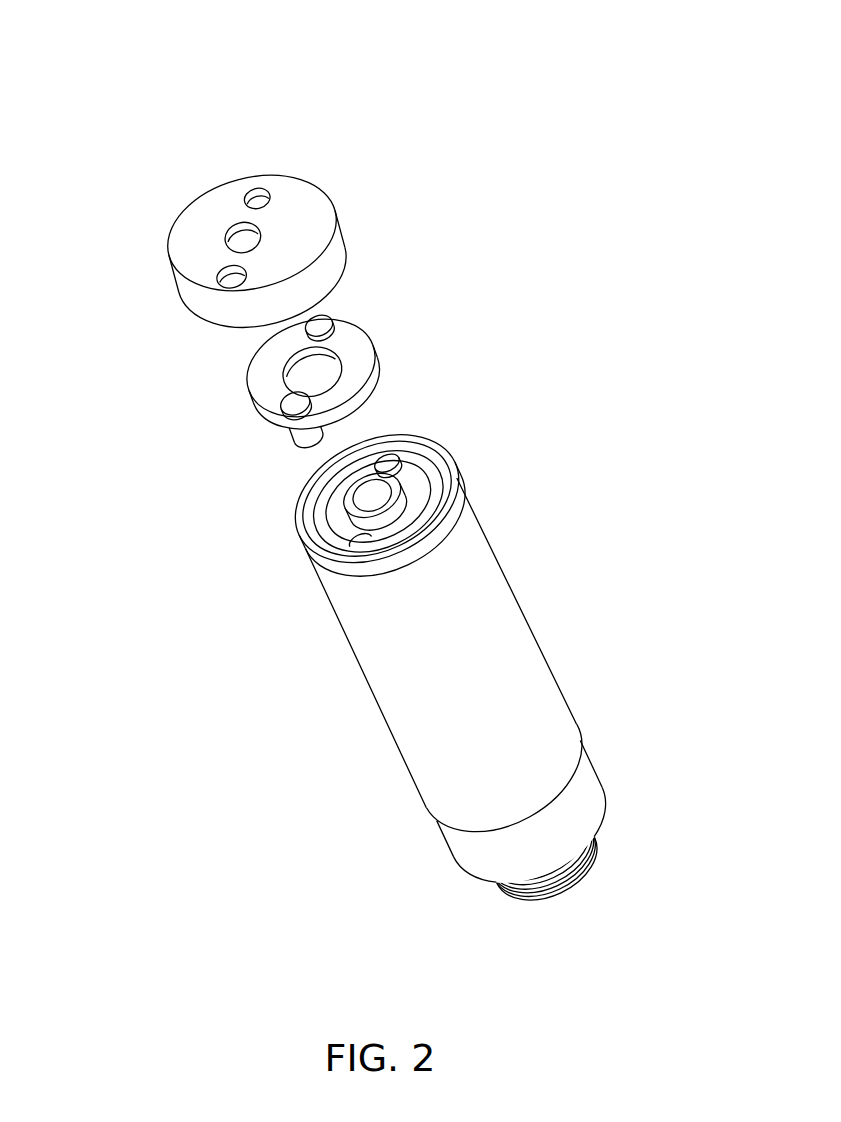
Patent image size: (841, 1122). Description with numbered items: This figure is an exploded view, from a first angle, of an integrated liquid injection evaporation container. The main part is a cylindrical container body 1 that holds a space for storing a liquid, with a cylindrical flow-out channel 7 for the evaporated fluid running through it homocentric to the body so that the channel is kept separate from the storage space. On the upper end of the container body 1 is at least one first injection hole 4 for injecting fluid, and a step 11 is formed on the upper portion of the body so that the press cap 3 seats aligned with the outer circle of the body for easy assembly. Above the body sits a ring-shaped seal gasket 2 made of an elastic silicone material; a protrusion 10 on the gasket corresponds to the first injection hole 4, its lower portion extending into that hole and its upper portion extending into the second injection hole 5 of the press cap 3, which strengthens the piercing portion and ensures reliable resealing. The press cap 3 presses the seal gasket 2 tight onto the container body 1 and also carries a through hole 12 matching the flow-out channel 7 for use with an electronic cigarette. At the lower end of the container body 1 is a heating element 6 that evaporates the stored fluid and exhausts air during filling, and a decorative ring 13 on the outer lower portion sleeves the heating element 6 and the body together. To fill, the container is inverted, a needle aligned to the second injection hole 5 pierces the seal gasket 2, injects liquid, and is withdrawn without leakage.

The container body 1 is at (493, 645).
The seal gasket 2 is at (370, 360).
The press cap 3 is at (310, 220).
The first injection hole 4 is at (385, 462).
The second injection hole 5 is at (227, 277).
The heating element 6 is at (500, 888).
The flow-out channel 7 is at (373, 494).
The protrusion 10 is at (305, 436).
The step 11 is at (340, 575).
The through hole 12 is at (250, 240).
The decorative ring 13 is at (587, 795).